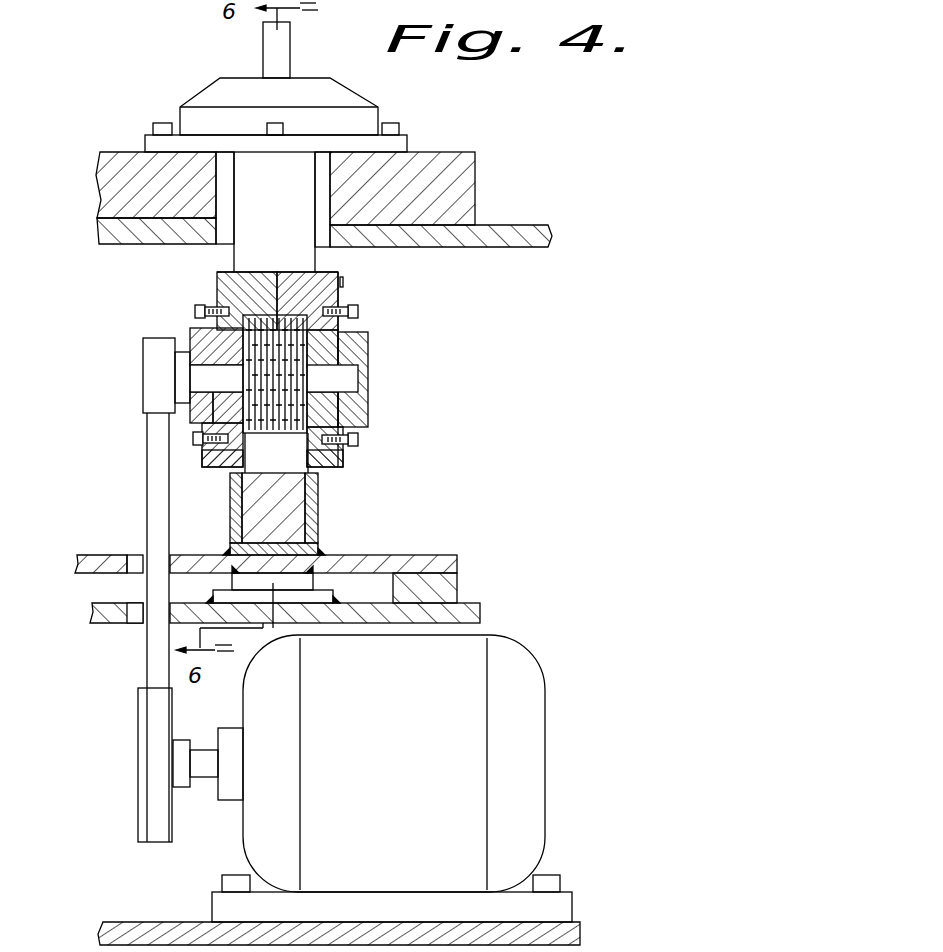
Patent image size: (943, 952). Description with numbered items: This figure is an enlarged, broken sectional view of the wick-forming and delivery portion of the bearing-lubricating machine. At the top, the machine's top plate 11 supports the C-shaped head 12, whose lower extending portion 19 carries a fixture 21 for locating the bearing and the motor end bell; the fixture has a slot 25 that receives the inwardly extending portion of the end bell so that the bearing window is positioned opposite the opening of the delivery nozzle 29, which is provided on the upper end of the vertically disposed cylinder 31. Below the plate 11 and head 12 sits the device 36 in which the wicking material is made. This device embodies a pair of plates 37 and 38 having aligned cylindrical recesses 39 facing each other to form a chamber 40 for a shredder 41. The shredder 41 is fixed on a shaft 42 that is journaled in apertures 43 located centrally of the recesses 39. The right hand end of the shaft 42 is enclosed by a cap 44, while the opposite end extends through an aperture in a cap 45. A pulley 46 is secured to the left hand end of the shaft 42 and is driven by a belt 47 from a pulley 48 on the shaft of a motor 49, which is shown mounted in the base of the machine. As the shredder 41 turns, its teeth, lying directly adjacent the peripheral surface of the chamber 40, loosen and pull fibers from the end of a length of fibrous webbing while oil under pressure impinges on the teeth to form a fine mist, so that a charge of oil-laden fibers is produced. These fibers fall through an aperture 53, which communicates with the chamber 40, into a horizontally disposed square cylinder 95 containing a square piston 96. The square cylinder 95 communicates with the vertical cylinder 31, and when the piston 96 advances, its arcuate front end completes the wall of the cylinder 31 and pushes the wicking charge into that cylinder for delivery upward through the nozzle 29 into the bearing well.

The top plate 11 is at (530, 232).
The C-shaped head 12 is at (98, 158).
The lower extending portion 19 is at (470, 158).
The fixture 21 is at (360, 90).
The slot 25 is at (303, 937).
The delivery nozzle 29 is at (268, 41).
The cylinder 31 is at (298, 193).
The device 36 is at (344, 270).
The plate 37 is at (217, 296).
The plate 38 is at (320, 298).
The cylindrical recesses 39 is at (292, 300).
The chamber 40 is at (298, 405).
The shredder 41 is at (303, 350).
The shaft 42 is at (347, 373).
The apertures 43 is at (346, 350).
The cap 44 is at (363, 388).
The cap 45 is at (175, 413).
The pulley 46 is at (143, 366).
The belt 47 is at (155, 494).
The pulley 48 is at (137, 753).
The motor 49 is at (395, 752).
The aperture 53 is at (312, 457).
The square cylinder 95 is at (318, 487).
The square piston 96 is at (293, 512).